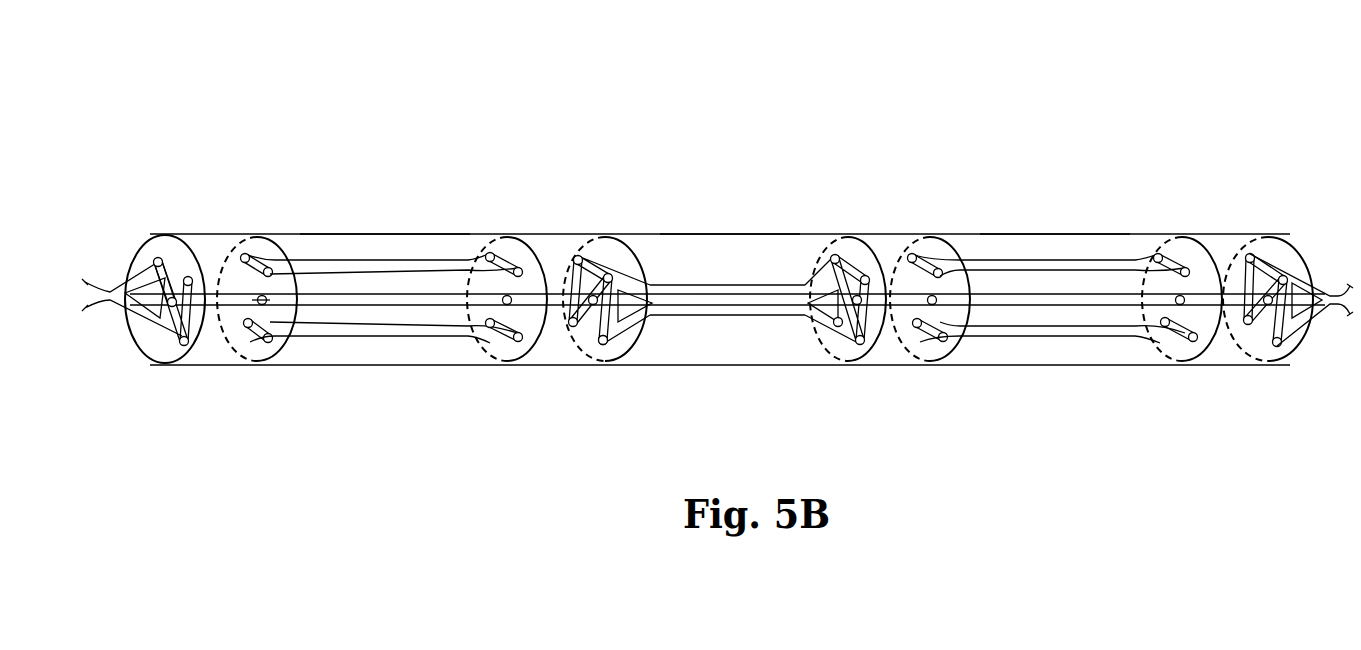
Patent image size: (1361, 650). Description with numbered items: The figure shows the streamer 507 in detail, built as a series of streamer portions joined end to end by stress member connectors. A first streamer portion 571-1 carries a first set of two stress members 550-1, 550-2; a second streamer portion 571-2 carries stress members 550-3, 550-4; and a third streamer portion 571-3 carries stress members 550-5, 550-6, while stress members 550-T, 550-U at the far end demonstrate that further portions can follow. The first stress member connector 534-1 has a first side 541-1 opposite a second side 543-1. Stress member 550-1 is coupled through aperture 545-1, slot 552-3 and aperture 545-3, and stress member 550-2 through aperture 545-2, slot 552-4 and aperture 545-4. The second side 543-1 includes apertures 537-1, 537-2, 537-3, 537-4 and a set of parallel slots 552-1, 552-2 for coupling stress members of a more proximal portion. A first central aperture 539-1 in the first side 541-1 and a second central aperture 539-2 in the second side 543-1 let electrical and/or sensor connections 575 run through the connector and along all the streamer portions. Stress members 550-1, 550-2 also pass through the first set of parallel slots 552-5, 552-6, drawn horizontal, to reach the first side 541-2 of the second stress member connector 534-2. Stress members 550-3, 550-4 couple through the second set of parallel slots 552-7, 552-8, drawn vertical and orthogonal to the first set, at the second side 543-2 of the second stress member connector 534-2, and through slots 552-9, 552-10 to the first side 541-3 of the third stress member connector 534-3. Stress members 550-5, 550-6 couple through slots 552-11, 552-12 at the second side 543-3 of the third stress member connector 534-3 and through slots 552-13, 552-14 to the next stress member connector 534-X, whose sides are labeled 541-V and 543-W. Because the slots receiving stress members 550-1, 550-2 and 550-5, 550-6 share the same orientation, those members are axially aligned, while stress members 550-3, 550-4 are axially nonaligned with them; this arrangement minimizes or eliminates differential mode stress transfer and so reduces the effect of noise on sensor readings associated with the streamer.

The streamer 507 is at (257, 62).
The aperture 537-1 is at (178, 260).
The aperture 537-2 is at (150, 258).
The aperture 537-3 is at (165, 348).
The aperture 537-4 is at (178, 340).
The aperture 545-1 is at (290, 256).
The aperture 545-2 is at (270, 342).
The aperture 545-3 is at (246, 253).
The aperture 545-4 is at (232, 335).
The slot 552-1 is at (162, 258).
The slot 552-2 is at (184, 278).
The slot 552-3 is at (270, 268).
The slot 552-4 is at (248, 328).
The first slot 552-5 is at (493, 253).
The second slot 552-6 is at (518, 342).
The third slot 552-7 is at (611, 274).
The fourth slot 552-8 is at (601, 345).
The slot 552-9 is at (836, 254).
The slot 552-10 is at (858, 345).
The slot 552-11 is at (915, 254).
The slot 552-12 is at (917, 328).
The slot 552-13 is at (1158, 253).
The slot 552-14 is at (1166, 328).
The first stress member connector 534-1 is at (212, 245).
The second stress member connector 534-2 is at (540, 248).
The third stress member connector 534-3 is at (895, 250).
The next stress member connector 534-X is at (1232, 258).
The stress member 550-1 is at (375, 258).
The stress member 550-2 is at (370, 340).
The stress member 550-3 is at (705, 318).
The stress member 550-4 is at (700, 284).
The stress member 550-5 is at (1043, 258).
The stress member 550-6 is at (1045, 340).
The stress member 550-T is at (1322, 255).
The stress member 550-U is at (1305, 345).
The first streamer portion 571-1 is at (448, 234).
The second streamer portion 571-2 is at (752, 234).
The third streamer portion 571-3 is at (1105, 234).
The second side of first stress member connector 543-1 is at (222, 345).
The second side of second stress member connector 543-2 is at (574, 258).
The second side of third stress member connector 543-3 is at (930, 250).
The truss 543-W is at (1246, 254).
The first side of first stress member connector 541-1 is at (185, 346).
The first side of second stress member connector 541-2 is at (498, 345).
The first side of third stress member connector 541-3 is at (830, 260).
The joint region 541-V is at (1184, 268).
The first central aperture 539-1 is at (150, 322).
The second central aperture 539-2 is at (270, 330).
The electrical and/or sensor connections 575 is at (400, 306).